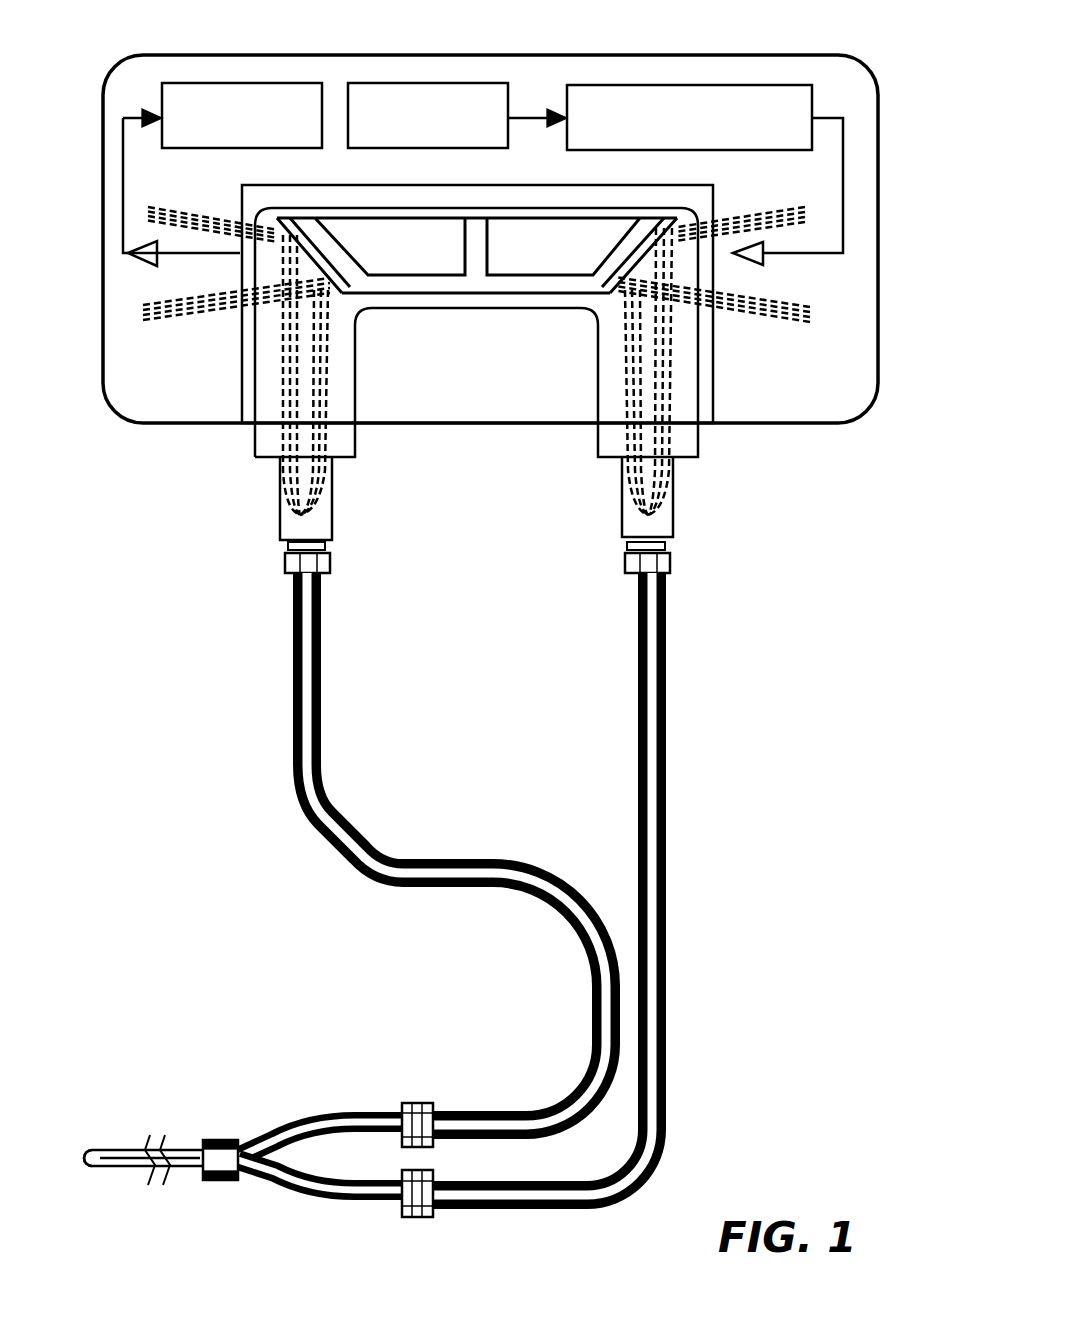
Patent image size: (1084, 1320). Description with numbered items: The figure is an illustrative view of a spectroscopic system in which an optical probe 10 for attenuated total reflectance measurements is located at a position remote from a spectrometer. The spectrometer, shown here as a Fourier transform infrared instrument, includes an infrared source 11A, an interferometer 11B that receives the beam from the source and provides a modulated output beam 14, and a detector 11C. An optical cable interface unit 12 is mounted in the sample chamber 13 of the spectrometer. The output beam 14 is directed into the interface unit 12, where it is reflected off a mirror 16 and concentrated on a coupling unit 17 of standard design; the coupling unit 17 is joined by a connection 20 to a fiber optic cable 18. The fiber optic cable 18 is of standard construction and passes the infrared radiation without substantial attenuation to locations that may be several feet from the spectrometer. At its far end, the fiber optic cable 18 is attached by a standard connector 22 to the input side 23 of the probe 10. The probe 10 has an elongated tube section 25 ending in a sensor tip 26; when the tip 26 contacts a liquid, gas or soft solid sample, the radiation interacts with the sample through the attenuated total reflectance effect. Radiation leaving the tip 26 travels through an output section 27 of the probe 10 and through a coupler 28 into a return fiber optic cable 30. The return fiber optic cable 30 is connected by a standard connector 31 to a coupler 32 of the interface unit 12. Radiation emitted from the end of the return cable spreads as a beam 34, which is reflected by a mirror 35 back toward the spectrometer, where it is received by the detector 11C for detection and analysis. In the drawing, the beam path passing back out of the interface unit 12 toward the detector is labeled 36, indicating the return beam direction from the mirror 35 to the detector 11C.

The optical probe 10 is at (252, 1108).
The infrared source 11A is at (467, 83).
The interferometer 11B is at (765, 85).
The detector 11C is at (285, 83).
The optical cable interface unit 12 is at (452, 310).
The sample chamber 13 is at (547, 186).
The output beam 14 is at (808, 272).
The mirror 16 is at (600, 306).
The coupling unit 17 is at (685, 465).
The fiber optic cable 18 is at (676, 840).
The connection 20 is at (685, 576).
The standard connector 22 is at (420, 1217).
The input side 23 is at (318, 1197).
The elongated tube section 25 is at (190, 1147).
The sensor tip 26 is at (85, 1147).
The output section 27 is at (340, 1117).
The coupler 28 is at (423, 1103).
The return fiber optic cable 30 is at (335, 863).
The connector 31 is at (330, 562).
The coupler 32 is at (283, 507).
The beam 34 is at (285, 370).
The mirror 35 is at (280, 232).
The output beam 36 is at (140, 257).